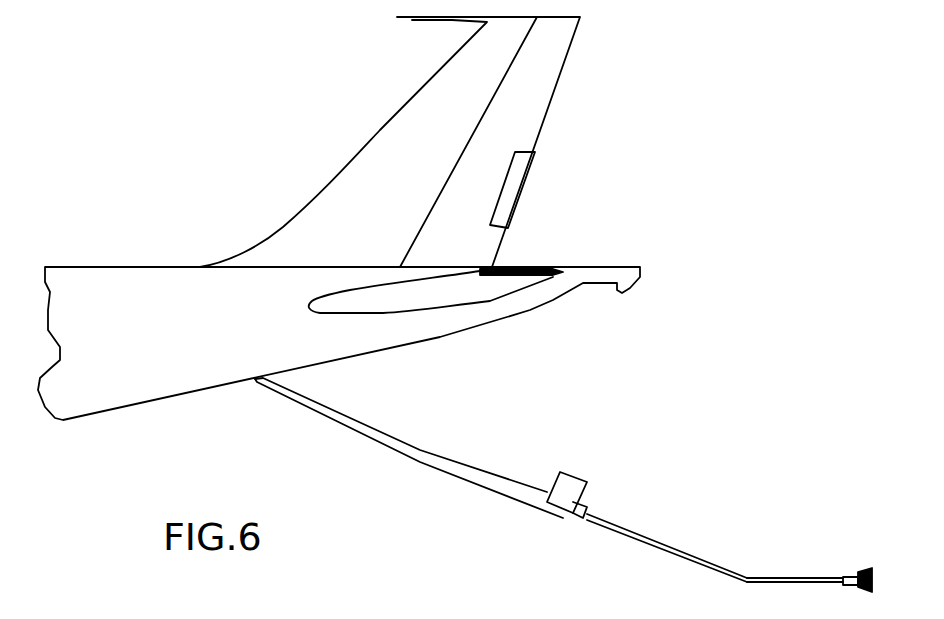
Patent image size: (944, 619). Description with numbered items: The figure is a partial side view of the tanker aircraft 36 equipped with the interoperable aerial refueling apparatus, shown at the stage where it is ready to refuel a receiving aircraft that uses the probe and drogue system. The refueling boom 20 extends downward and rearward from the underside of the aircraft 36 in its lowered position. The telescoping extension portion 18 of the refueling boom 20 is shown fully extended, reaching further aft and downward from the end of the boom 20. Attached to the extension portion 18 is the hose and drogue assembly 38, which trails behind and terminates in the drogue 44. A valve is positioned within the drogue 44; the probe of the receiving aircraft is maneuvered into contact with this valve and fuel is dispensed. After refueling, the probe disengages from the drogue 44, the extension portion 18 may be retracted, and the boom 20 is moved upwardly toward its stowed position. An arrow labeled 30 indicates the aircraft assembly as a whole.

The tanker aircraft 30 is at (637, 253).
The aircraft 36 is at (168, 332).
The refueling boom 20 is at (313, 412).
The extension portion 18 is at (635, 523).
The hose and drogue assembly 38 is at (800, 578).
The drogue 44 is at (863, 568).